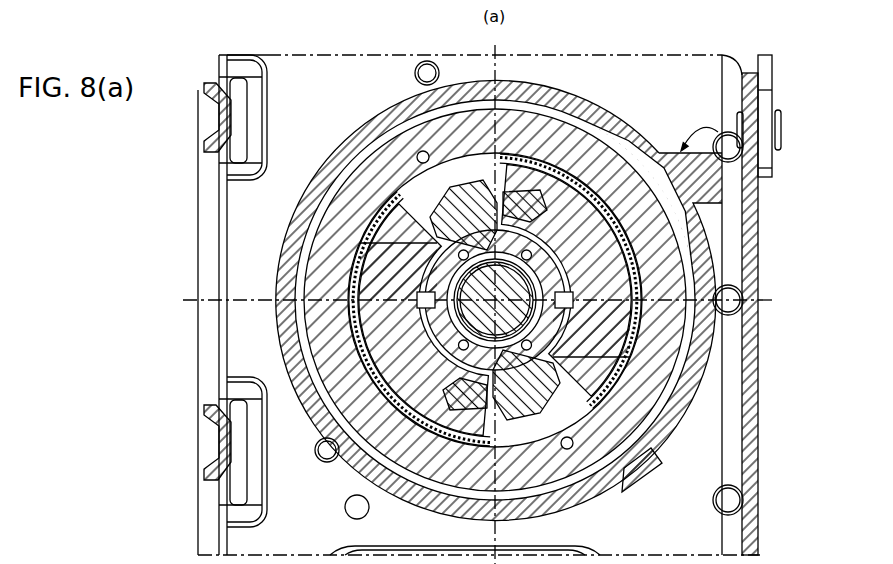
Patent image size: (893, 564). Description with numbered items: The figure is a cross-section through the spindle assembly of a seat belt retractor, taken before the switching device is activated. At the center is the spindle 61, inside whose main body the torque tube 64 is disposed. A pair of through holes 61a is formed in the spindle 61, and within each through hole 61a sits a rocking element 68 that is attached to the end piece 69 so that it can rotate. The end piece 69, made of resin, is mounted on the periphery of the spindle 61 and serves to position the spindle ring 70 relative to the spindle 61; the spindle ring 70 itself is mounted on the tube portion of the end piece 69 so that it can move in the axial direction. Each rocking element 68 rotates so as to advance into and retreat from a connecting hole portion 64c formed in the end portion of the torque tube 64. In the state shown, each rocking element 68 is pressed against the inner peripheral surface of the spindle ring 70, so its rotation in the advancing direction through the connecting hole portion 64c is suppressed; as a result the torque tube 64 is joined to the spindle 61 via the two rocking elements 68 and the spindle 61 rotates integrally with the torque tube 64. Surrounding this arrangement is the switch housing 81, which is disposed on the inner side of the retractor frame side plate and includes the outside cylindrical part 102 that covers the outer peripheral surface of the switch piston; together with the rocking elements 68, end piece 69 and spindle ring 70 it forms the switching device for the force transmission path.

The outside cylindrical part 102 is at (383, 112).
The spindle ring 70 is at (425, 137).
The rocking element 68 is at (463, 195).
The connecting hole portion 64c is at (515, 203).
The switch housing 81 is at (722, 137).
The through hole 61a is at (377, 203).
The torque tube 64 is at (385, 290).
The spindle 61 is at (378, 328).
The end piece 69 is at (628, 263).